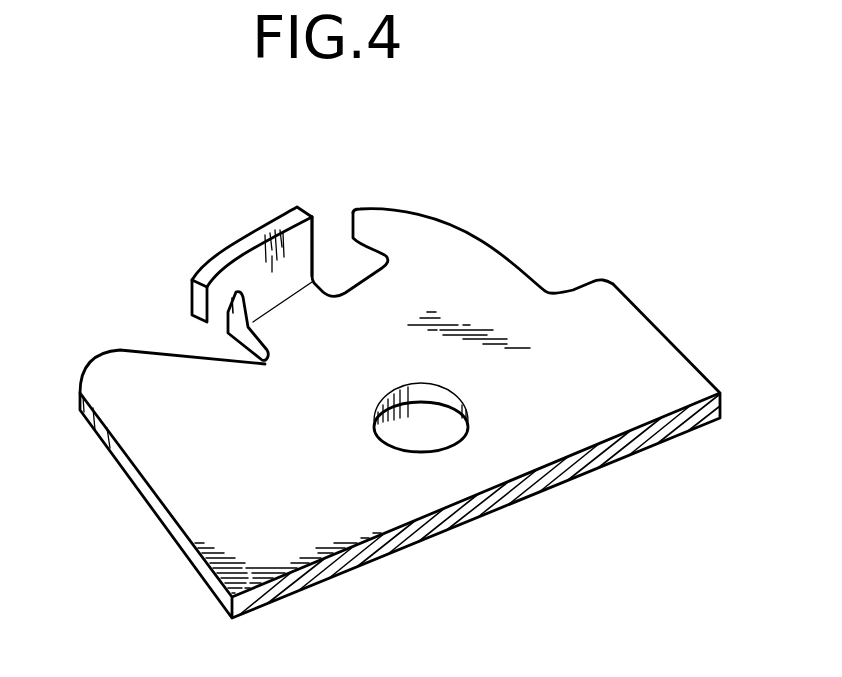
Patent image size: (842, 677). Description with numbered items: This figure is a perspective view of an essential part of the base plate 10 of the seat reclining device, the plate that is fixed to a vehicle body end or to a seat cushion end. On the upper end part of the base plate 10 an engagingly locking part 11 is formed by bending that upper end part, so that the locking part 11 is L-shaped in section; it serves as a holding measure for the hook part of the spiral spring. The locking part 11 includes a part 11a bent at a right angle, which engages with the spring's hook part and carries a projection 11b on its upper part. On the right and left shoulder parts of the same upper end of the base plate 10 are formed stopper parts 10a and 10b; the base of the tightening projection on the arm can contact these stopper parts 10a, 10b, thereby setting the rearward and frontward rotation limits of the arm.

The base plate 10 is at (677, 376).
The stopper part 10a is at (140, 351).
The stopper part 10b is at (570, 288).
The engagingly locking part 11 is at (236, 240).
The bent part 11a is at (222, 303).
The projection 11b is at (197, 302).